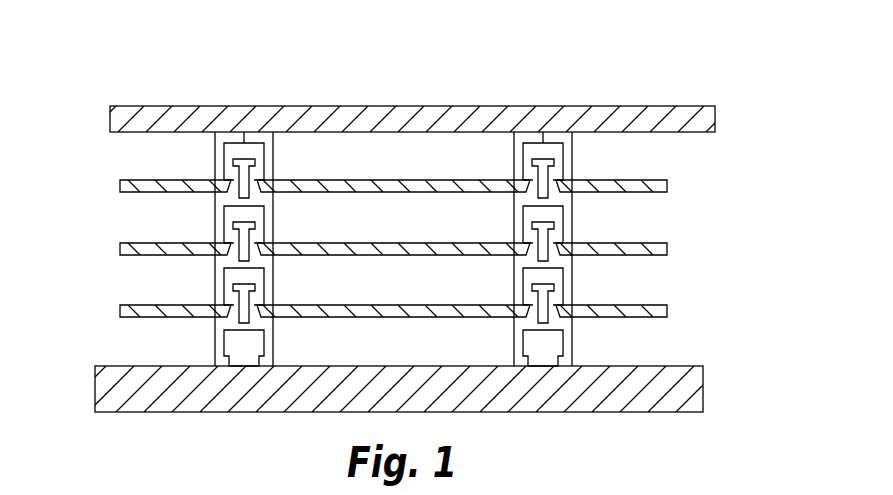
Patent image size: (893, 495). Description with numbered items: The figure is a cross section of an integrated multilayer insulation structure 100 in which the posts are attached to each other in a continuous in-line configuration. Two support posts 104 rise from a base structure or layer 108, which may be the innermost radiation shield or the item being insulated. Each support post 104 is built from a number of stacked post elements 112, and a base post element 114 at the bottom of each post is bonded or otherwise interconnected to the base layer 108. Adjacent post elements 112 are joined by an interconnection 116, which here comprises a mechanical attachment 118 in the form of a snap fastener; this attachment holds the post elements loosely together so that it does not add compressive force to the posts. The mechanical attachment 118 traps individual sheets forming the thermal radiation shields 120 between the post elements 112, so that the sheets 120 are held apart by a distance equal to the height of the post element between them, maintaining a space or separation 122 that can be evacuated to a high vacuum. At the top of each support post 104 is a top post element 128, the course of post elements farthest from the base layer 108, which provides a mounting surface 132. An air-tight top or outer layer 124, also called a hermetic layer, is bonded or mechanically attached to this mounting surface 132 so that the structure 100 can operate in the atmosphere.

The integrated multilayer insulation structure 100 is at (426, 223).
The support post 104 is at (436, 249).
The base structure or layer 108 is at (714, 385).
The post element 112 is at (277, 149).
The base post element 114 is at (274, 346).
The interconnection 116 is at (225, 290).
The mechanical attachment 118 is at (258, 160).
The thermal radiation shield 120 is at (119, 249).
The space or separation 122 is at (103, 138).
The top or outer layer 124 is at (411, 82).
The top post element 128 is at (276, 138).
The mounting surface 132 is at (257, 122).